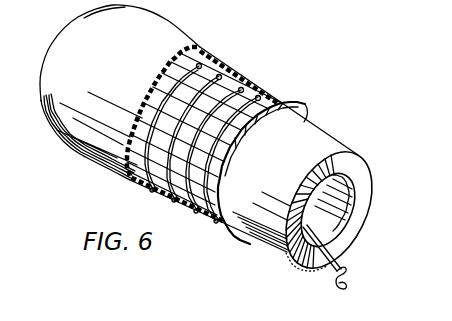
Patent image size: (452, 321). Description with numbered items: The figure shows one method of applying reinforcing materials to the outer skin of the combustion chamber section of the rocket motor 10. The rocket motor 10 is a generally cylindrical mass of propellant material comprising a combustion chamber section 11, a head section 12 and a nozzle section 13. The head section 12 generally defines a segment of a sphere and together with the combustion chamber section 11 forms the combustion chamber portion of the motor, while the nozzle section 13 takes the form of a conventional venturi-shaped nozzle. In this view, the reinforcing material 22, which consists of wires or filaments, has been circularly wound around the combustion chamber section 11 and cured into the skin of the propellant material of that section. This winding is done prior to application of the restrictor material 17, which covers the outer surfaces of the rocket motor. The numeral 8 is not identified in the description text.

The rocket motor 10 is at (117, 173).
The combustion chamber section 11 is at (87, 147).
The head section 12 is at (43, 65).
The nozzle section 13 is at (318, 138).
The restrictor material 17 is at (200, 47).
The reinforcing material 22 is at (242, 73).
The numeral 8 (partial) 8 is at (20, 127).